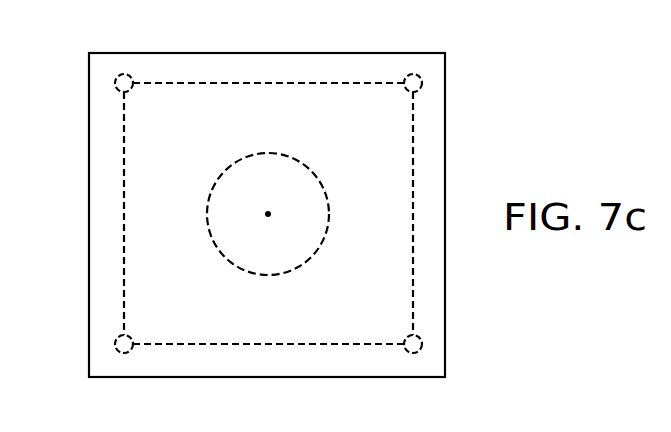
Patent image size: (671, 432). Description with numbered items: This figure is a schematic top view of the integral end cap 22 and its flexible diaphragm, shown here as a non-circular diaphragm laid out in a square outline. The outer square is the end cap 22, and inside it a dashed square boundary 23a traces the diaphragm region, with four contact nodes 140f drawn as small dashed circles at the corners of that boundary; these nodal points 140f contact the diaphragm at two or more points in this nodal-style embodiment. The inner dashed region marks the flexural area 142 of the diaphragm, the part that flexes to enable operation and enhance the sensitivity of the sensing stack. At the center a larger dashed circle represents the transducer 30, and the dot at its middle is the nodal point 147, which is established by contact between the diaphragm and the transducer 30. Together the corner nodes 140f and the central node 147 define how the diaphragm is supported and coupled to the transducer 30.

The end cap 22 is at (89, 167).
The dashed outline 23a is at (164, 83).
The transducer 30 is at (293, 188).
The nodal points 140f is at (114, 83).
The flexural area 142 is at (175, 212).
The nodal point 147 is at (327, 193).